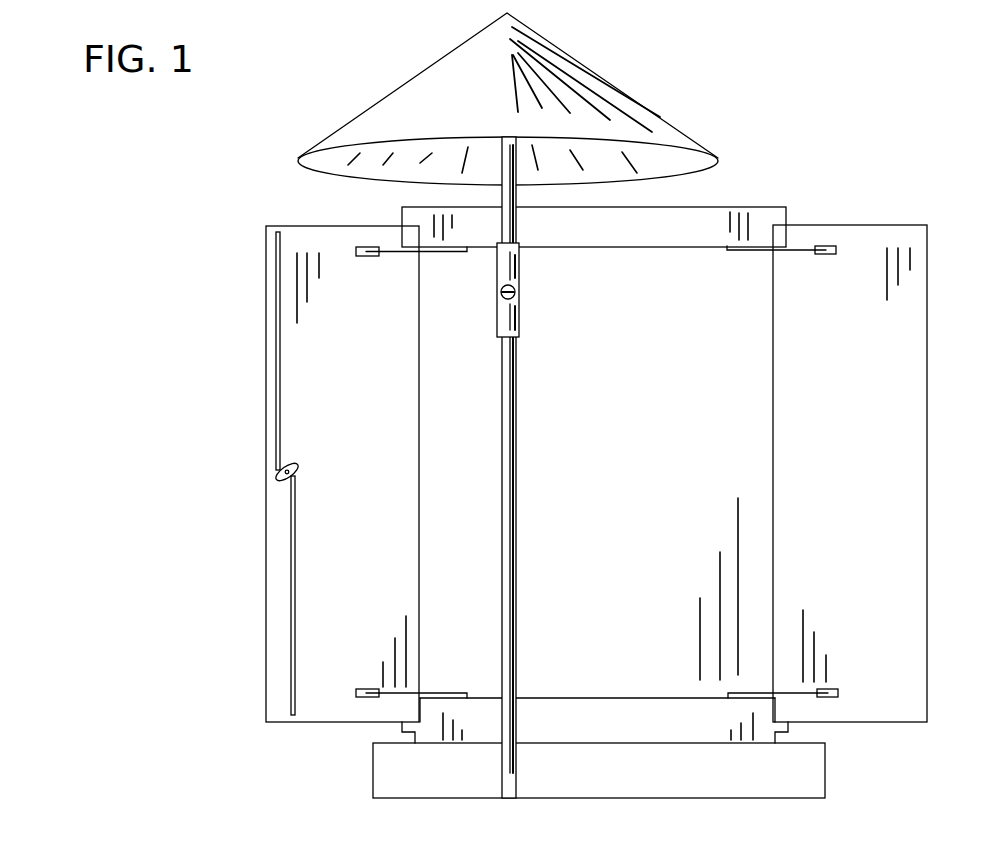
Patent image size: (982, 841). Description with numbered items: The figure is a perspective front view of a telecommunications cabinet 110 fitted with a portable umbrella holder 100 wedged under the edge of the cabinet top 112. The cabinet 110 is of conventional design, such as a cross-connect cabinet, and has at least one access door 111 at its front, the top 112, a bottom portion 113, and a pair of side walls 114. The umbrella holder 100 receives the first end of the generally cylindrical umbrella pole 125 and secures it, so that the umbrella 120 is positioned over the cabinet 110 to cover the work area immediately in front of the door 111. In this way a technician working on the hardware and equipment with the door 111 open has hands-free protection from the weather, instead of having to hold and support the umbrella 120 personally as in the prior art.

The umbrella holder 100 is at (497, 290).
The telecommunications cabinet 110 is at (240, 573).
The access door 111 is at (892, 372).
The top 112 is at (713, 207).
The bottom portion 113 is at (372, 757).
The side wall 114 is at (786, 219).
The umbrella 120 is at (357, 95).
The umbrella pole 125 is at (502, 618).